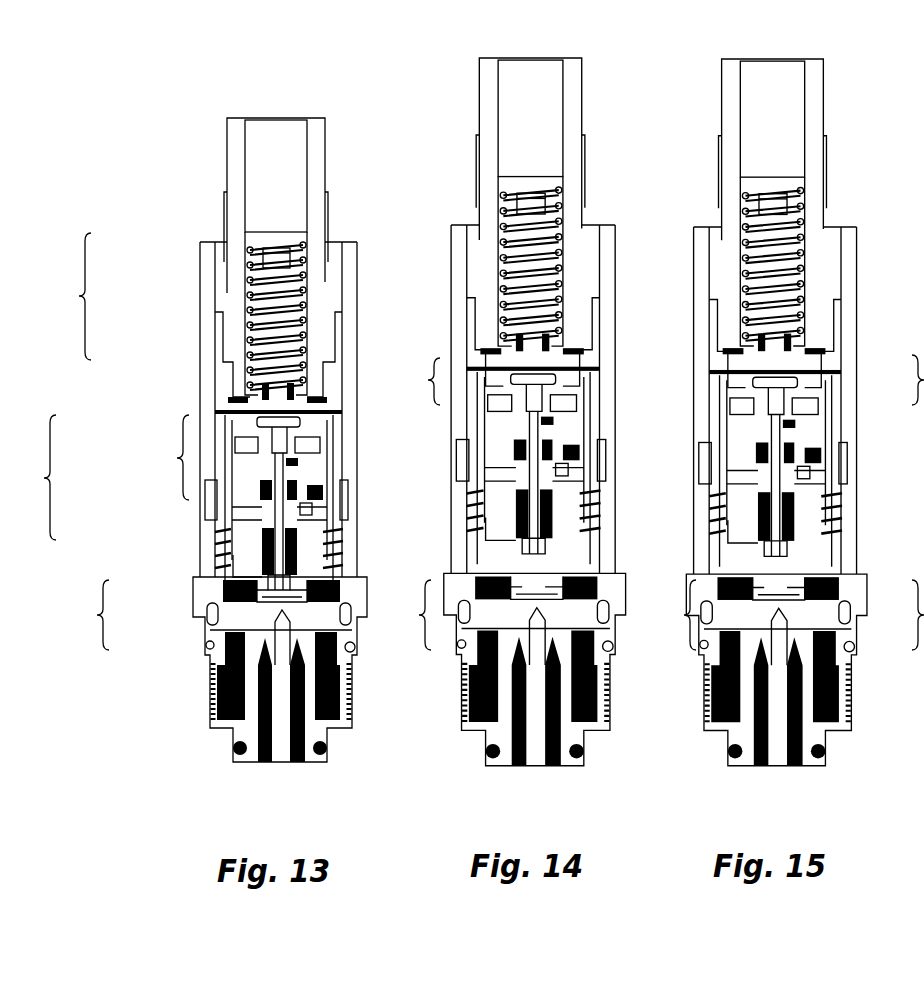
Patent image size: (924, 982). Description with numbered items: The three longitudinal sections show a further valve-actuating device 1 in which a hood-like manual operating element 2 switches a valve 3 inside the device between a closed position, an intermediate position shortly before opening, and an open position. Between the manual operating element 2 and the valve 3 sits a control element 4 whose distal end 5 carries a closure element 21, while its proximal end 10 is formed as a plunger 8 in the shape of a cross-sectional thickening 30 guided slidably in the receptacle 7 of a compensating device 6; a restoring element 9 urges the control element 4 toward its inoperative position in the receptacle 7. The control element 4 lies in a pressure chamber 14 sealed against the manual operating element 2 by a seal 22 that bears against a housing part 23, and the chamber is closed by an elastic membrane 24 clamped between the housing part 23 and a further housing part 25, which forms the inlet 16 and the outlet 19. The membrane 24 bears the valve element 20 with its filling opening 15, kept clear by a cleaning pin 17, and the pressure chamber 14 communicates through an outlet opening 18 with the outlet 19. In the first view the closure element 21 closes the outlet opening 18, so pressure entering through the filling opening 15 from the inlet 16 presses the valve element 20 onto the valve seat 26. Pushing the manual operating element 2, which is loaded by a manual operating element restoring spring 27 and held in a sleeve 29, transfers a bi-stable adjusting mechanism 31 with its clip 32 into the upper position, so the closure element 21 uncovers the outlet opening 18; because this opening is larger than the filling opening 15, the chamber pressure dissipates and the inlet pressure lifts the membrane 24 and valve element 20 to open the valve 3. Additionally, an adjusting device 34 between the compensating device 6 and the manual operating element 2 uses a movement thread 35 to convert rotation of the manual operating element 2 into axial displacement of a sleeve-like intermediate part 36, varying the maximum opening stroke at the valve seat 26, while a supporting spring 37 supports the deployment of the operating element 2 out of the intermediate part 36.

In FIG. 13, the valve-actuating device 1 is at (344, 158).
In FIG. 14, the valve-actuating device 1 is at (607, 124).
In FIG. 15, the valve-actuating device 1 is at (857, 114).
In FIG. 13, the manual operating element 2 is at (230, 155).
In FIG. 14, the manual operating element 2 is at (487, 97).
In FIG. 15, the manual operating element 2 is at (812, 90).
In FIG. 13, the valve 3 is at (84, 615).
In FIG. 14, the valve 3 is at (413, 615).
In FIG. 15, the valve 3 is at (789, 615).
In FIG. 13, the control element 4 is at (280, 548).
In FIG. 14, the control element 4 is at (520, 500).
In FIG. 15, the control element 4 is at (802, 475).
In FIG. 13, the distal end 5 is at (240, 580).
In FIG. 14, the distal end 5 is at (500, 570).
In FIG. 15, the distal end 5 is at (756, 546).
In FIG. 13, the compensating device 6 is at (169, 457).
In FIG. 14, the compensating device 6 is at (420, 383).
In FIG. 15, the compensating device 6 is at (913, 381).
In FIG. 13, the receptacle 7 is at (276, 440).
In FIG. 14, the receptacle 7 is at (535, 405).
In FIG. 15, the receptacle 7 is at (770, 405).
In FIG. 13, the plunger 8 is at (300, 455).
In FIG. 14, the plunger 8 is at (545, 425).
In FIG. 15, the plunger 8 is at (777, 400).
In FIG. 13, the restoring element 9 is at (305, 545).
In FIG. 14, the restoring element 9 is at (562, 535).
In FIG. 15, the restoring element 9 is at (802, 530).
In FIG. 13, the proximal end 10 is at (300, 462).
In FIG. 14, the proximal end 10 is at (560, 433).
In FIG. 15, the proximal end 10 is at (760, 432).
In FIG. 13, the pressure chamber 14 is at (340, 590).
In FIG. 14, the pressure chamber 14 is at (600, 588).
In FIG. 15, the pressure chamber 14 is at (847, 575).
In FIG. 13, the filling opening 15 is at (350, 652).
In FIG. 14, the filling opening 15 is at (607, 660).
In FIG. 15, the filling opening 15 is at (850, 654).
In FIG. 13, the inlet 16 is at (345, 717).
In FIG. 14, the inlet 16 is at (480, 722).
In FIG. 15, the inlet 16 is at (837, 724).
In FIG. 13, the cleaning pin 17 is at (342, 607).
In FIG. 13, the outlet opening 18 is at (215, 690).
In FIG. 14, the outlet opening 18 is at (475, 695).
In FIG. 15, the outlet opening 18 is at (718, 695).
In FIG. 13, the outlet 19 is at (290, 752).
In FIG. 14, the outlet 19 is at (565, 752).
In FIG. 15, the outlet 19 is at (771, 755).
In FIG. 13, the valve element 20 is at (283, 640).
In FIG. 14, the valve element 20 is at (520, 645).
In FIG. 15, the valve element 20 is at (770, 640).
In FIG. 13, the closure element 21 is at (225, 590).
In FIG. 14, the closure element 21 is at (633, 485).
In FIG. 15, the closure element 21 is at (754, 487).
In FIG. 13, the seal 22 is at (303, 507).
In FIG. 14, the seal 22 is at (560, 495).
In FIG. 15, the seal 22 is at (802, 510).
In FIG. 13, the housing part 23 is at (265, 540).
In FIG. 14, the housing part 23 is at (525, 530).
In FIG. 15, the housing part 23 is at (802, 495).
In FIG. 13, the elastic membrane 24 is at (240, 617).
In FIG. 14, the elastic membrane 24 is at (592, 590).
In FIG. 15, the elastic membrane 24 is at (825, 590).
In FIG. 13, the further housing part 25 is at (250, 742).
In FIG. 14, the further housing part 25 is at (495, 752).
In FIG. 15, the further housing part 25 is at (742, 752).
In FIG. 13, the valve seat 26 is at (277, 622).
In FIG. 14, the valve seat 26 is at (590, 720).
In FIG. 15, the valve seat 26 is at (836, 700).
In FIG. 13, the manual operating element restoring spring 27 is at (258, 545).
In FIG. 14, the manual operating element restoring spring 27 is at (468, 565).
In FIG. 13, the sleeve 29 is at (356, 312).
In FIG. 14, the sleeve 29 is at (613, 296).
In FIG. 15, the sleeve 29 is at (845, 272).
In FIG. 13, the cross-sectional thickening 30 is at (283, 458).
In FIG. 14, the cross-sectional thickening 30 is at (540, 395).
In FIG. 15, the cross-sectional thickening 30 is at (777, 432).
In FIG. 13, the bi-stable adjusting mechanism 31 is at (30, 477).
In FIG. 13, the clip 32 is at (322, 408).
In FIG. 14, the clip 32 is at (533, 466).
In FIG. 15, the clip 32 is at (730, 370).
In FIG. 13, the adjusting device 34 is at (62, 296).
In FIG. 13, the movement thread 35 is at (318, 330).
In FIG. 14, the movement thread 35 is at (582, 290).
In FIG. 15, the movement thread 35 is at (834, 290).
In FIG. 13, the intermediate part 36 is at (222, 335).
In FIG. 14, the intermediate part 36 is at (590, 330).
In FIG. 15, the intermediate part 36 is at (832, 302).
In FIG. 13, the supporting spring 37 is at (260, 300).
In FIG. 14, the supporting spring 37 is at (515, 245).
In FIG. 15, the supporting spring 37 is at (775, 245).